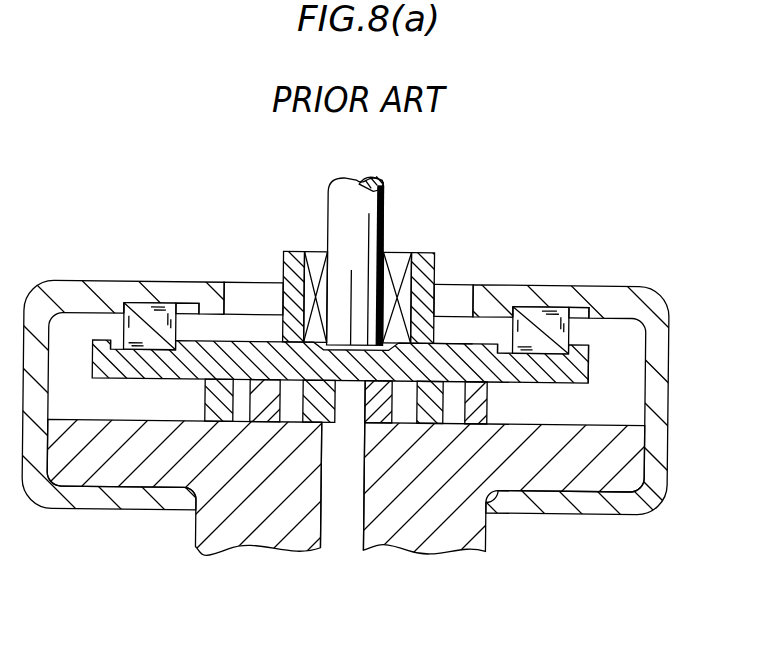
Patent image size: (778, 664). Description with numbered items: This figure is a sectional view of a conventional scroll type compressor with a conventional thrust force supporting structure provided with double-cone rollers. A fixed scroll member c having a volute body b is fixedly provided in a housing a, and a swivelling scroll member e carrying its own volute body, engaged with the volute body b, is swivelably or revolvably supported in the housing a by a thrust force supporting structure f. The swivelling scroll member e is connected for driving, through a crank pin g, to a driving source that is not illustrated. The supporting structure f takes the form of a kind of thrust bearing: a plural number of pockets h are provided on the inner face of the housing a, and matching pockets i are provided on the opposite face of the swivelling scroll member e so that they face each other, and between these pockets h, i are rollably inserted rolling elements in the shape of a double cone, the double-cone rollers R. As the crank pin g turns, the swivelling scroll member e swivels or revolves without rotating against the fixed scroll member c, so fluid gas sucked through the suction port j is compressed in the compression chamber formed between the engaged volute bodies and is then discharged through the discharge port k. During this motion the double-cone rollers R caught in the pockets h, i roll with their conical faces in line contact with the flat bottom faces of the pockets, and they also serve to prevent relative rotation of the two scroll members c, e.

The housing a is at (79, 283).
The volute body b is at (206, 404).
The fixed scroll member c is at (487, 533).
The swivelling scroll member e is at (453, 342).
The thrust force supporting structure f is at (602, 339).
The crank pin g is at (370, 228).
The pocket h is at (190, 311).
The pocket i is at (117, 316).
The suction port j is at (246, 290).
The discharge port k is at (342, 527).
The double-cone roller R is at (157, 303).